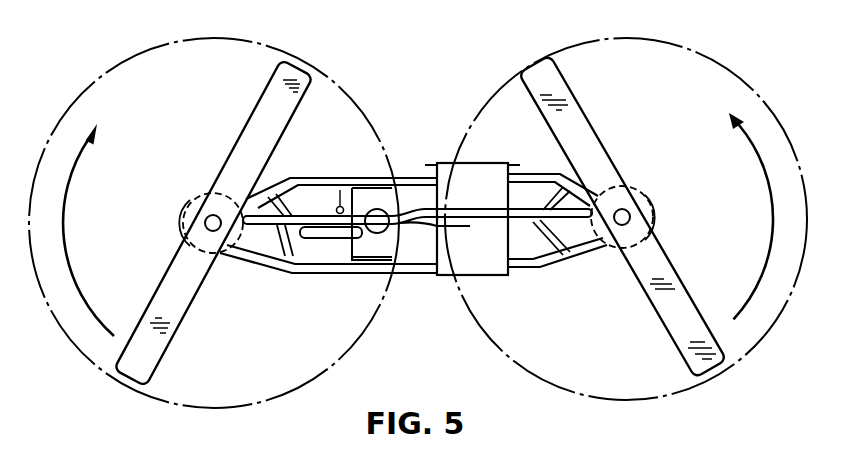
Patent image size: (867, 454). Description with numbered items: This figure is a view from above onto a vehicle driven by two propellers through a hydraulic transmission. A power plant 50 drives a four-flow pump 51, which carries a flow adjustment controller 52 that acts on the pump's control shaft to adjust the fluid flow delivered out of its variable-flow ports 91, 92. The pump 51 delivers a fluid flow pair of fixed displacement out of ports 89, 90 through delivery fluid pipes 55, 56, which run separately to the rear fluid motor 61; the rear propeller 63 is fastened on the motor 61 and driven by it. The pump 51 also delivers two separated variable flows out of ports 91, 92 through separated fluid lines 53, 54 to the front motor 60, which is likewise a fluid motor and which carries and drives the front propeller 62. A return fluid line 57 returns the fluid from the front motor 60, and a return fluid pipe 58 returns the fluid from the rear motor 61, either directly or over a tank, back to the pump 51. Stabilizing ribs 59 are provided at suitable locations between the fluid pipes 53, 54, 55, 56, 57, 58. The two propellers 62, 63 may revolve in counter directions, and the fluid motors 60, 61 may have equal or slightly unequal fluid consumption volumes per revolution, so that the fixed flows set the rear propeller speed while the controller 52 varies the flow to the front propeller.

The power plant 50 is at (461, 257).
The four-flow pump 51 is at (417, 256).
The flow adjustment controller 52 is at (341, 206).
The fluid line 53 is at (310, 273).
The fluid line 54 is at (300, 178).
The delivery fluid pipe 55 is at (537, 267).
The delivery fluid pipe 56 is at (532, 174).
The return fluid line 57 is at (245, 258).
The return fluid pipe 58 is at (602, 253).
The stabilizing ribs 59 is at (262, 197).
The front motor 60 is at (192, 210).
The fluid motor 61 is at (652, 205).
The front propeller 62 is at (160, 343).
The rear propeller 63 is at (682, 312).
The port 89 is at (517, 266).
The port 90 is at (507, 168).
The port 91 is at (347, 268).
The port 92 is at (352, 182).